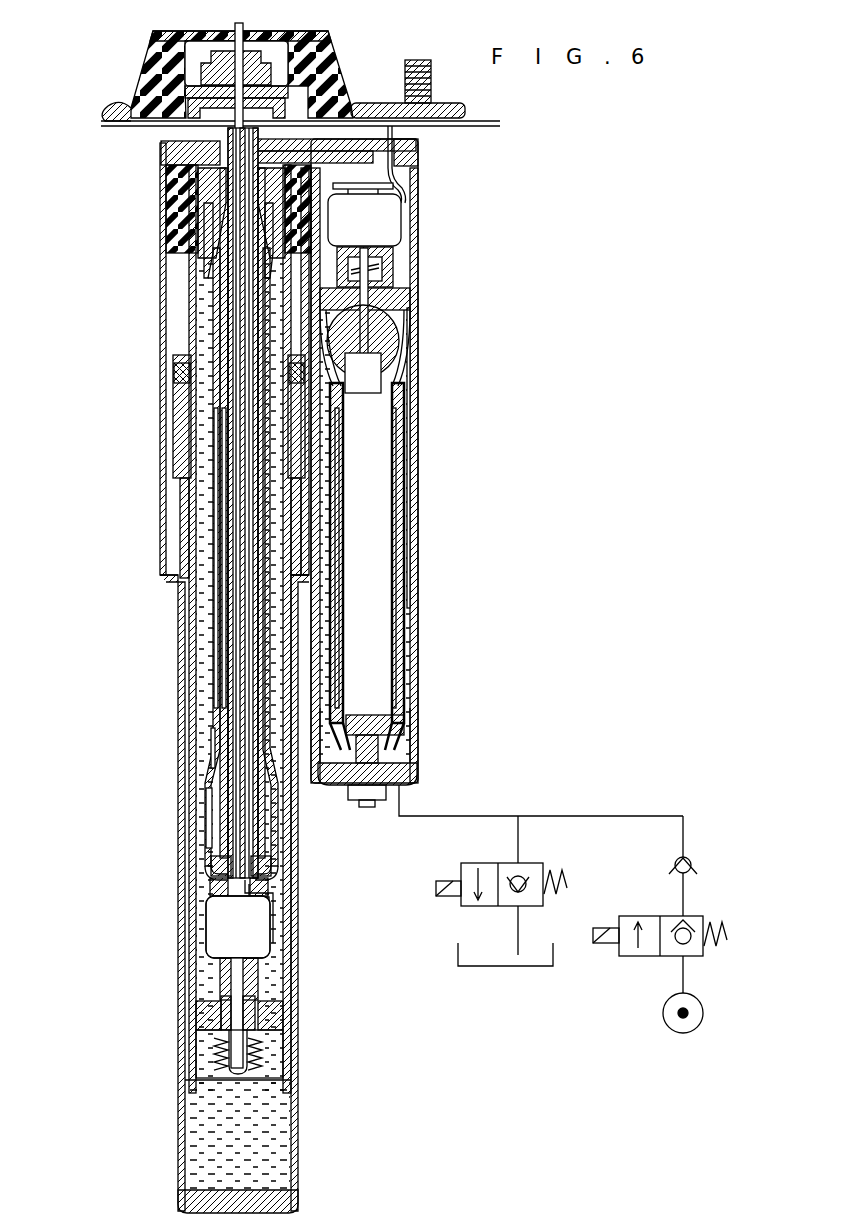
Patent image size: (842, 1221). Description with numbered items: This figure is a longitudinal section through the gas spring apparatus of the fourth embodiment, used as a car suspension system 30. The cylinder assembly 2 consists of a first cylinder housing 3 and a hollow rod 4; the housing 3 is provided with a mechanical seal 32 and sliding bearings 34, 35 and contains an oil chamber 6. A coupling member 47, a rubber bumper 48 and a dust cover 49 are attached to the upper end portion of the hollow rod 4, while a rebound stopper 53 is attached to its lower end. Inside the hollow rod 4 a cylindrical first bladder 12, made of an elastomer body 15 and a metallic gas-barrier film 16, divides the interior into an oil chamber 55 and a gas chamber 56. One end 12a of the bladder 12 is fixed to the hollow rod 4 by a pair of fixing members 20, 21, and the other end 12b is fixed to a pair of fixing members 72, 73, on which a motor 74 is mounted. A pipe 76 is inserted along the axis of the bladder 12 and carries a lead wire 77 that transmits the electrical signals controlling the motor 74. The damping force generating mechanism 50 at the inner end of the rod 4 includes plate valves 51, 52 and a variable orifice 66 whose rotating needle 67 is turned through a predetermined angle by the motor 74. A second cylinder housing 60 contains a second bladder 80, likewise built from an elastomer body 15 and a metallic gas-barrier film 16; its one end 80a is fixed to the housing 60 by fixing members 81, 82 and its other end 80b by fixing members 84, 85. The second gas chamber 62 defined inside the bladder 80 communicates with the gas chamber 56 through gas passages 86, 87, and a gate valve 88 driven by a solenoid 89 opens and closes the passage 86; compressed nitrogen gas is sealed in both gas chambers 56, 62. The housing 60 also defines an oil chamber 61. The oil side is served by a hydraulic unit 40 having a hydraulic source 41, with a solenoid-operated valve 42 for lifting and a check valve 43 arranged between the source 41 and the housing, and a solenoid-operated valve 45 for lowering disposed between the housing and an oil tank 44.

The cylinder assembly 2 is at (175, 818).
The cylinder housing 3 is at (185, 798).
The hollow rod 4 is at (155, 300).
The oil chamber 6 is at (200, 1116).
The first bladder 12 is at (207, 333).
The end portion of bladder 12a is at (200, 175).
The other end of bladder 12b is at (215, 865).
The elastomer body 15 is at (207, 690).
The metallic gas-barrier film 16 is at (218, 655).
The fixing member 20 is at (160, 140).
The fixing member 21 is at (188, 190).
The car suspension system 30 is at (540, 160).
The mechanical seal 32 is at (166, 363).
The sliding bearing 34 is at (175, 428).
The sliding bearing 35 is at (205, 913).
The hydraulic unit 40 is at (630, 808).
The hydraulic source 41 is at (692, 1016).
The solenoid-operated valve for lifting 42 is at (695, 913).
The check valve 43 is at (690, 850).
The oil tank 44 is at (474, 958).
The solenoid-operated valve for lowering 45 is at (445, 886).
The coupling member 47 is at (130, 66).
The rubber bumper 48 is at (168, 225).
The dust cover 49 is at (175, 518).
The damping force generating mechanism 50 is at (205, 1033).
The plate valve 51 is at (258, 993).
The plate valve 52 is at (255, 1028).
The rebound stopper 53 is at (168, 583).
The oil chamber 55 is at (198, 723).
The gas chamber 56 is at (218, 620).
The second cylinder housing 60 is at (405, 468).
The oil chamber 61 is at (397, 438).
The second gas chamber 62 is at (362, 601).
The variable orifice 66 is at (215, 955).
The rotating needle 67 is at (230, 963).
The fixing member 72 is at (258, 858).
The fixing member 73 is at (258, 880).
The motor 74 is at (258, 931).
The pipe 76 is at (208, 788).
The lead wire 77 is at (225, 832).
The second bladder 80 is at (398, 538).
The one end of second bladder 80a is at (390, 341).
The other end of second bladder 80b is at (395, 743).
The fixing member 81 is at (385, 288).
The fixing member 82 is at (380, 323).
The fixing member 84 is at (372, 708).
The fixing member 85 is at (345, 777).
The gas passage 86 is at (357, 347).
The gas passage 87 is at (353, 143).
The gate valve 88 is at (385, 260).
The solenoid 89 is at (385, 208).